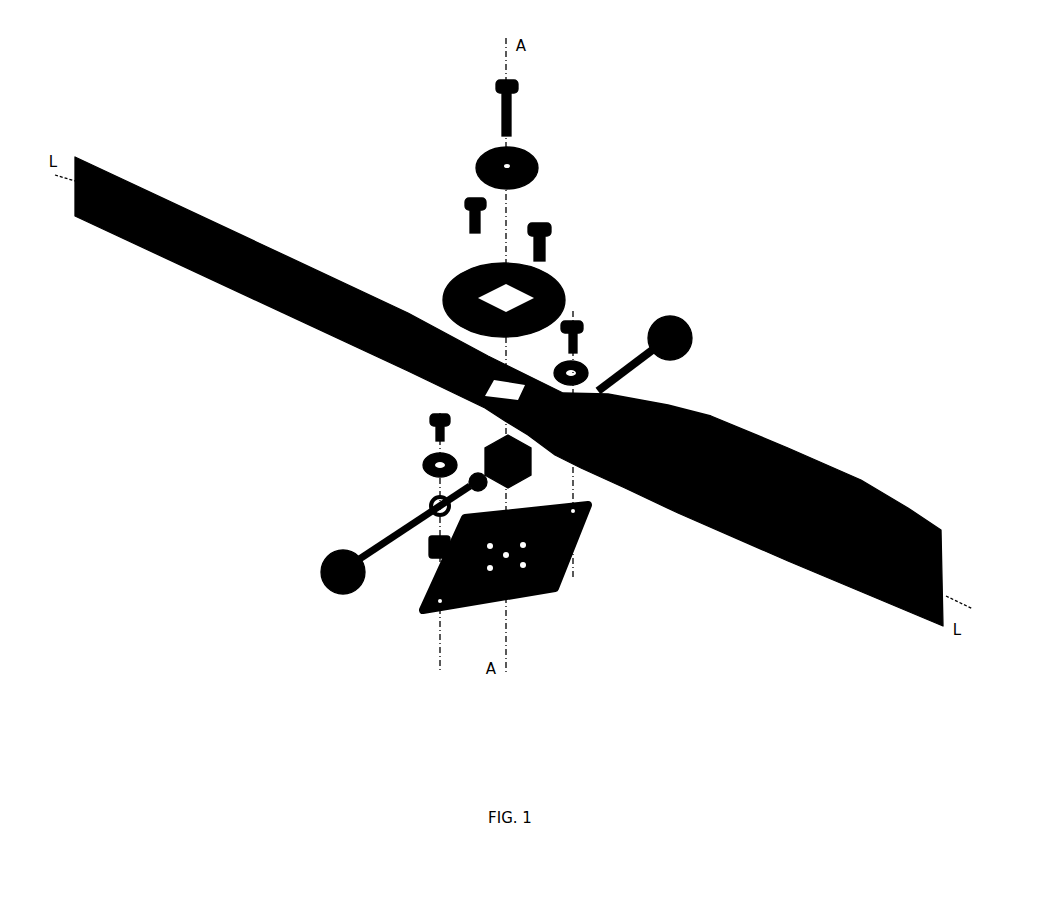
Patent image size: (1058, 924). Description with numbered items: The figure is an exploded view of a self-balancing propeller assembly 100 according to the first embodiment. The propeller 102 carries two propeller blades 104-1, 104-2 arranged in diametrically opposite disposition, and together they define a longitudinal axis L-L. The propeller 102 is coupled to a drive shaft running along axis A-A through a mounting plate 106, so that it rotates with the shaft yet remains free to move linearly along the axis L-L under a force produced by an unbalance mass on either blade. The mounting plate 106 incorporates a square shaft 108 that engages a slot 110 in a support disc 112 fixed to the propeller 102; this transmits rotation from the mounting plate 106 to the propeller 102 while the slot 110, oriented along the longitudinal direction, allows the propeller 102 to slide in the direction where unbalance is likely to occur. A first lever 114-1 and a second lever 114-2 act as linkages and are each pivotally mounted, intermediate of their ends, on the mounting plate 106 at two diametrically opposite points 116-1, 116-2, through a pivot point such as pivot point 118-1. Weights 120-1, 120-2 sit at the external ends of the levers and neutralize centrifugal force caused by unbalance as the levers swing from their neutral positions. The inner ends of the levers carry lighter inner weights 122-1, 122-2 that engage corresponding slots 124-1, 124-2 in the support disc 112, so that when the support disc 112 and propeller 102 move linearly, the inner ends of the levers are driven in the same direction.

The self-balancing propeller assembly 100 is at (218, 63).
The propeller 102 is at (230, 305).
The propeller blade 104-1 is at (193, 205).
The propeller blade 104-2 is at (853, 472).
The mounting plate 106 is at (573, 540).
The square shaft 108 is at (523, 463).
The slot 110 is at (520, 296).
The support disc 112 is at (563, 278).
The first lever 114-1 is at (380, 547).
The second lever 114-2 is at (632, 369).
The mounting point 116-1 is at (438, 556).
The mounting point 116-2 is at (576, 456).
The pivot point 118-1 is at (420, 495).
The weight 120-1 is at (315, 580).
The weight 120-2 is at (690, 317).
The inner weight 122-1 is at (415, 458).
The inner weight 122-2 is at (513, 423).
The slot 124-1 is at (447, 270).
The slot 124-2 is at (528, 270).